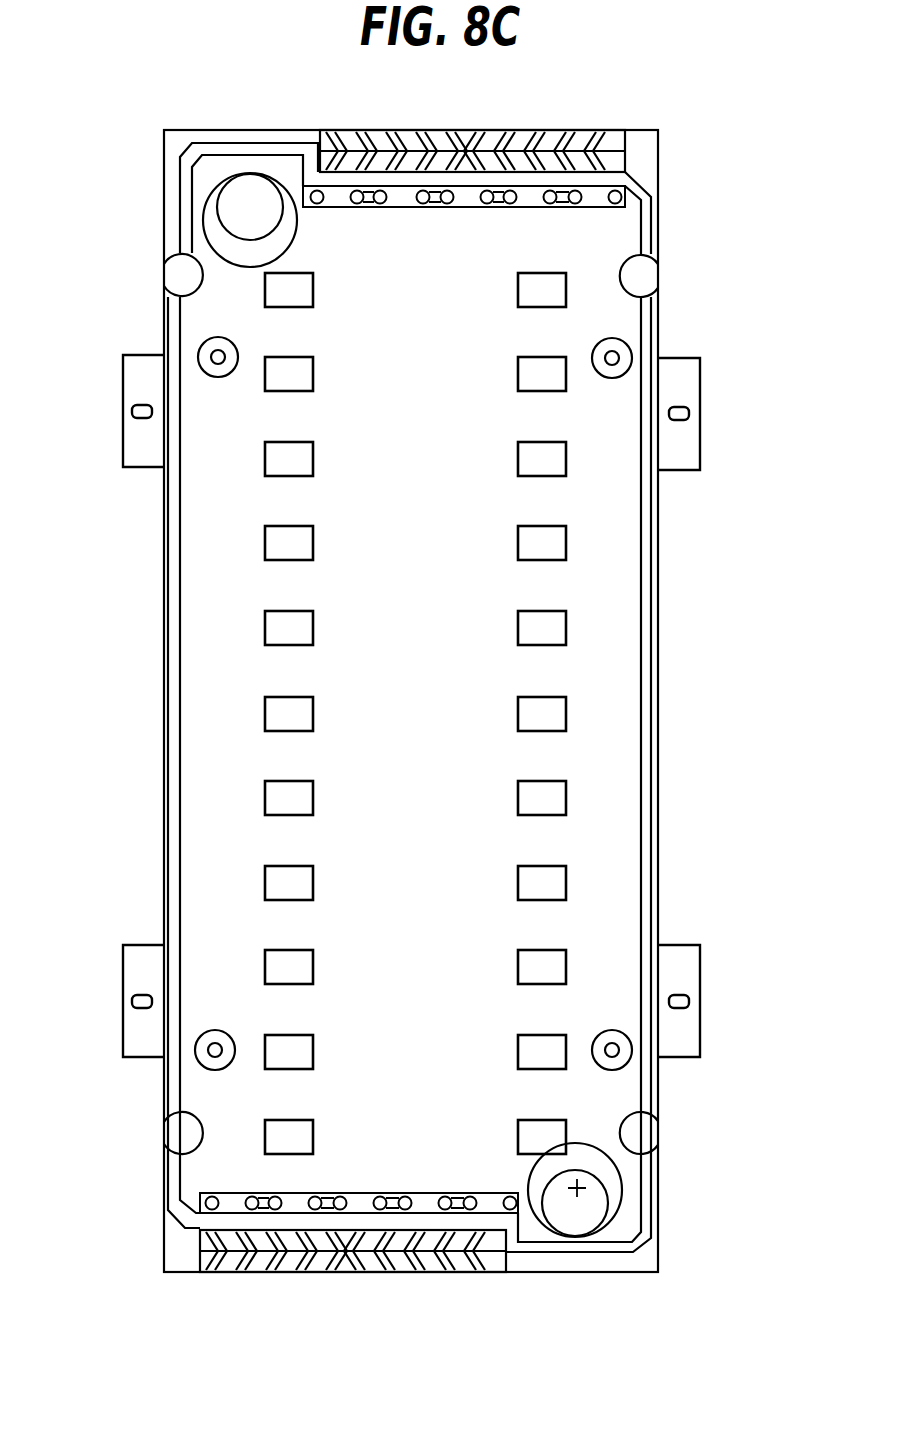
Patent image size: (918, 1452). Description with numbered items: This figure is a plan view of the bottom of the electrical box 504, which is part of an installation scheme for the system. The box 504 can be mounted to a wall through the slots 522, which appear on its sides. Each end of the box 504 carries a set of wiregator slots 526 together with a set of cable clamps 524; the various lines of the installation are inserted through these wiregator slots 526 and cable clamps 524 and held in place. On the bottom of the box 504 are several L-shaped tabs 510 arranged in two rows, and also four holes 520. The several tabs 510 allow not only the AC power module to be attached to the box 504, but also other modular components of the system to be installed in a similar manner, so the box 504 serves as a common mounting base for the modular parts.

The electrical box 504 is at (163, 712).
The L-shaped tabs 510 is at (313, 371).
The holes 520 is at (197, 352).
The slots 522 is at (123, 398).
The cable clamps 524 is at (618, 201).
The wiregator slots 526 is at (612, 130).